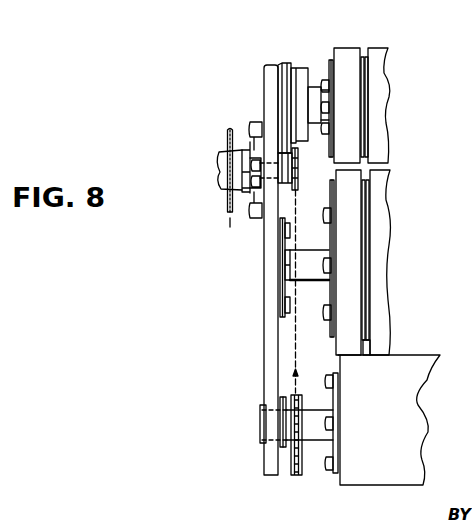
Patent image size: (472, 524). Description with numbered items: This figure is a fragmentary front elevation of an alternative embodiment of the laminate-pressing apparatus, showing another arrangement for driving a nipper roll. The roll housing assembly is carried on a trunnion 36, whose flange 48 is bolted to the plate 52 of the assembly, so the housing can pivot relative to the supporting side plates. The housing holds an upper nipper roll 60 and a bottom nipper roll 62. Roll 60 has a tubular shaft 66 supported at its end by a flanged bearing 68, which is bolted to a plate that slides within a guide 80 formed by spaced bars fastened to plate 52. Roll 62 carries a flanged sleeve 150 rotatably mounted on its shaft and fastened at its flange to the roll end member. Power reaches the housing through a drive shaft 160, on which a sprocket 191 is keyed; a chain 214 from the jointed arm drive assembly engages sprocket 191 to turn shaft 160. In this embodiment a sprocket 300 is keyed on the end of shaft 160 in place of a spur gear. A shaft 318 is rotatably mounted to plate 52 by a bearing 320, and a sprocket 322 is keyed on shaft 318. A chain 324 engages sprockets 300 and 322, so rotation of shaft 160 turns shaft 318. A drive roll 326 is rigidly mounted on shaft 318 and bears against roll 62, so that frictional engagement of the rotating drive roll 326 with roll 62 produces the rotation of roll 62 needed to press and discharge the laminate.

The trunnion 36 is at (252, 141).
The flange 48 is at (263, 216).
The plate 52 is at (268, 373).
The nipper roll 60 is at (348, 46).
The nipper roll 62 is at (333, 344).
The tubular shaft 66 is at (318, 87).
The flanged bearing 68 is at (303, 68).
The guide 80 is at (274, 62).
The flanged sleeve 150 is at (312, 256).
The drive shaft 160 is at (298, 163).
The sprocket 191 is at (222, 182).
The chain 214 is at (229, 223).
The sprocket 300 is at (299, 187).
The shaft 318 is at (317, 441).
The bearing 320 is at (282, 446).
The sprocket 322 is at (293, 470).
The chain 324 is at (294, 328).
The drive roll 326 is at (366, 479).